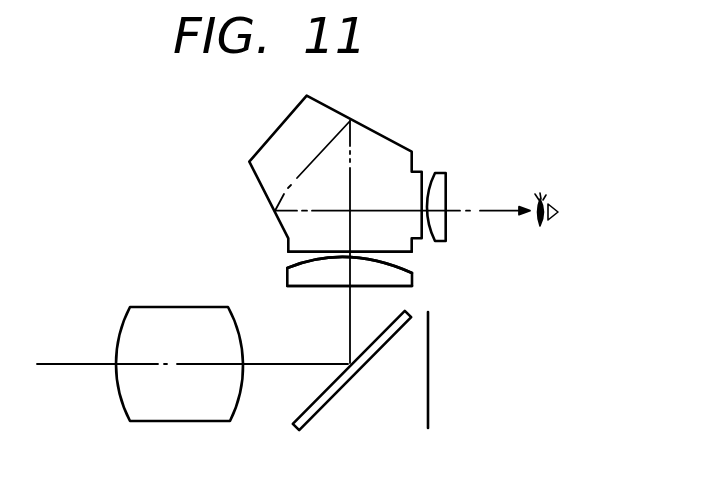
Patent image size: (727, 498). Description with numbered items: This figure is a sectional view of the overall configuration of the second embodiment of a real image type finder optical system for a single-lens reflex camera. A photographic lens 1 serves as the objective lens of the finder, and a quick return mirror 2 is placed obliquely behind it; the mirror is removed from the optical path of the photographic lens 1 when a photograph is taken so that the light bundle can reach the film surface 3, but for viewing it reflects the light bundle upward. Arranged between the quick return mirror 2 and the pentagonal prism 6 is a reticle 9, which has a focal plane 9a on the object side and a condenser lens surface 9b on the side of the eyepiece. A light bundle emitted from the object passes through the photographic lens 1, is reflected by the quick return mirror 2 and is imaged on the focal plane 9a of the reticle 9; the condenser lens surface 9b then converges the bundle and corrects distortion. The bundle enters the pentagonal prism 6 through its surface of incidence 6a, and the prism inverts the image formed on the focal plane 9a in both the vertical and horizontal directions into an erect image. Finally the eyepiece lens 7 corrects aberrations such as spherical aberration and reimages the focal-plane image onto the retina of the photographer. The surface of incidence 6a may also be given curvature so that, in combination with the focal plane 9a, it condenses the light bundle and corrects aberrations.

The photographic lens 1 is at (206, 423).
The quick return mirror 2 is at (401, 312).
The film surface 3 is at (428, 418).
The pentagonal prism 6 is at (374, 130).
The surface of incidence 6a is at (288, 251).
The eyepiece lens 7 is at (438, 172).
The reticle 9 is at (413, 274).
The focal plane 9a is at (310, 287).
The condenser lens surface 9b is at (289, 266).